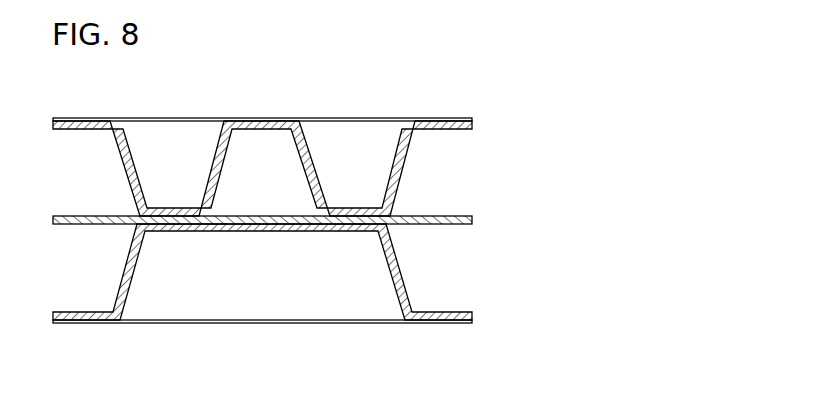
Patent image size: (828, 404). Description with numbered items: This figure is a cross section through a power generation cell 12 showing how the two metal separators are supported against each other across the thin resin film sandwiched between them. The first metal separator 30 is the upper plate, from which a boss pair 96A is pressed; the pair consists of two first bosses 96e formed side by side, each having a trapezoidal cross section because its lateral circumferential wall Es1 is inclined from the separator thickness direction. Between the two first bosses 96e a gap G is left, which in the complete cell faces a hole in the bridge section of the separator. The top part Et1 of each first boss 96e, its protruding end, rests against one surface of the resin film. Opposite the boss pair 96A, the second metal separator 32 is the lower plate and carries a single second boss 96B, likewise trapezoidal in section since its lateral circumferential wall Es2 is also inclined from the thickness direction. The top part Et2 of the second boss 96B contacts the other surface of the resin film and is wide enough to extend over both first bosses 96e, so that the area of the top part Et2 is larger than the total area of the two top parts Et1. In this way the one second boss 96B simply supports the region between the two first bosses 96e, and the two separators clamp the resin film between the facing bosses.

The heat exchanger core / plate stack 12 is at (220, 58).
The first metal separator 30 is at (440, 117).
The second metal separator 32 is at (440, 324).
The boss pair 96A is at (408, 168).
The second boss 96B is at (410, 272).
The first boss 96e is at (128, 187).
The lateral circumferential wall Es1 is at (122, 158).
The lateral circumferential wall Es2 is at (121, 275).
The top part Et1 is at (181, 219).
The top part Et2 is at (235, 216).
The gap G is at (287, 173).